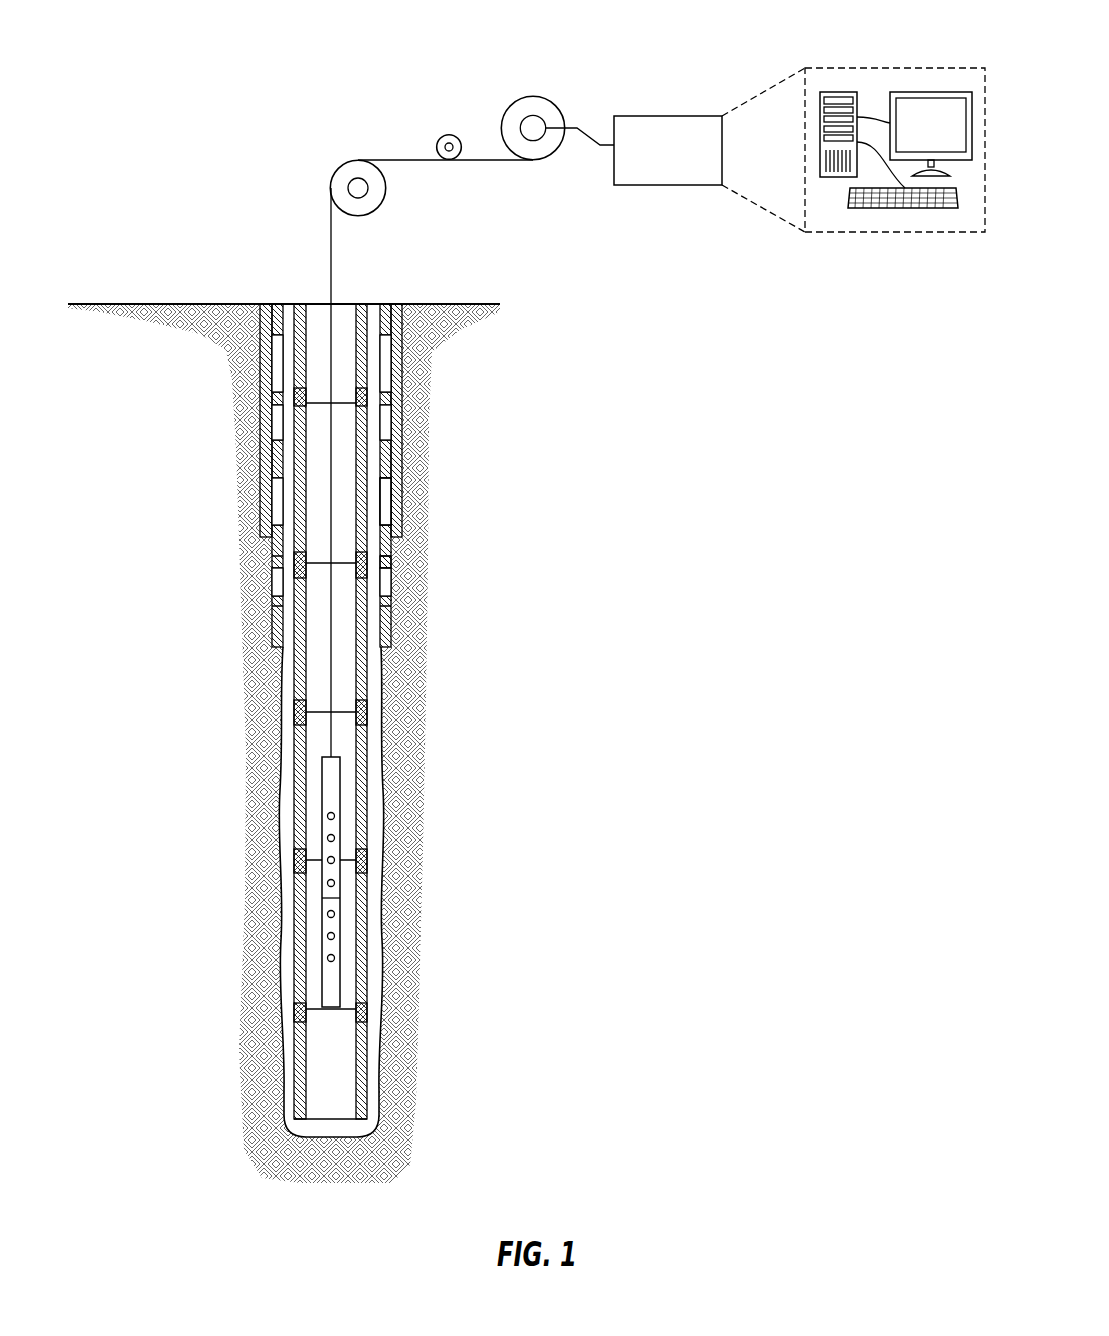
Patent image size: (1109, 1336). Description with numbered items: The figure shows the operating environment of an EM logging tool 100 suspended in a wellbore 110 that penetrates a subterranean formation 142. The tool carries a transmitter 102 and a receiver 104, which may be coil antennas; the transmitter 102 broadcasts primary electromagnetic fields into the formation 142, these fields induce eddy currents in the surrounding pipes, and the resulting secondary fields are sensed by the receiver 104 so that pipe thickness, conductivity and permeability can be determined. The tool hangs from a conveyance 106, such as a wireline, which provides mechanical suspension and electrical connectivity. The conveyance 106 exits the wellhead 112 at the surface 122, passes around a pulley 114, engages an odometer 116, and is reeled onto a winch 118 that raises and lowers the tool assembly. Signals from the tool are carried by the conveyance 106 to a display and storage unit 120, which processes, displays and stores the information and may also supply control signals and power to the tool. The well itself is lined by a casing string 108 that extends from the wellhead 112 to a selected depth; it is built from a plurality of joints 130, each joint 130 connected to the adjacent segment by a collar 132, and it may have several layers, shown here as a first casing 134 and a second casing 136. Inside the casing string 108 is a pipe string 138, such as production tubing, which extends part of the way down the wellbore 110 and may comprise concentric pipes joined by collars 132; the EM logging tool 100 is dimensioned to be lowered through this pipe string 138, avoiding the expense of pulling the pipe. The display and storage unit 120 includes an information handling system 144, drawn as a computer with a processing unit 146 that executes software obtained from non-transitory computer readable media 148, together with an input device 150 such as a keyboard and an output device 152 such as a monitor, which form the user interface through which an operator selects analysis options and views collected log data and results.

The EM logging tool 100 is at (330, 993).
The transmitter 102 is at (336, 816).
The receiver 104 is at (338, 838).
The conveyance 106 is at (333, 262).
The casing string 108 is at (258, 525).
The wellbore 110 is at (384, 655).
The wellhead 112 is at (319, 301).
The pulley 114 is at (332, 175).
The odometer 116 is at (450, 134).
The winch 118 is at (550, 100).
The display and storage unit 120 is at (676, 116).
The surface 122 is at (108, 302).
The joint 130 is at (280, 313).
The collar 132 is at (280, 347).
The first casing 134 is at (388, 565).
The second casing 136 is at (394, 511).
The pipe string 138 is at (368, 1075).
The subterranean formation 142 is at (619, 636).
The information handling system 144 is at (875, 68).
The processing unit 146 is at (838, 180).
The non-transitory computer readable media 148 is at (840, 92).
The input device 150 is at (900, 209).
The output device 152 is at (930, 92).